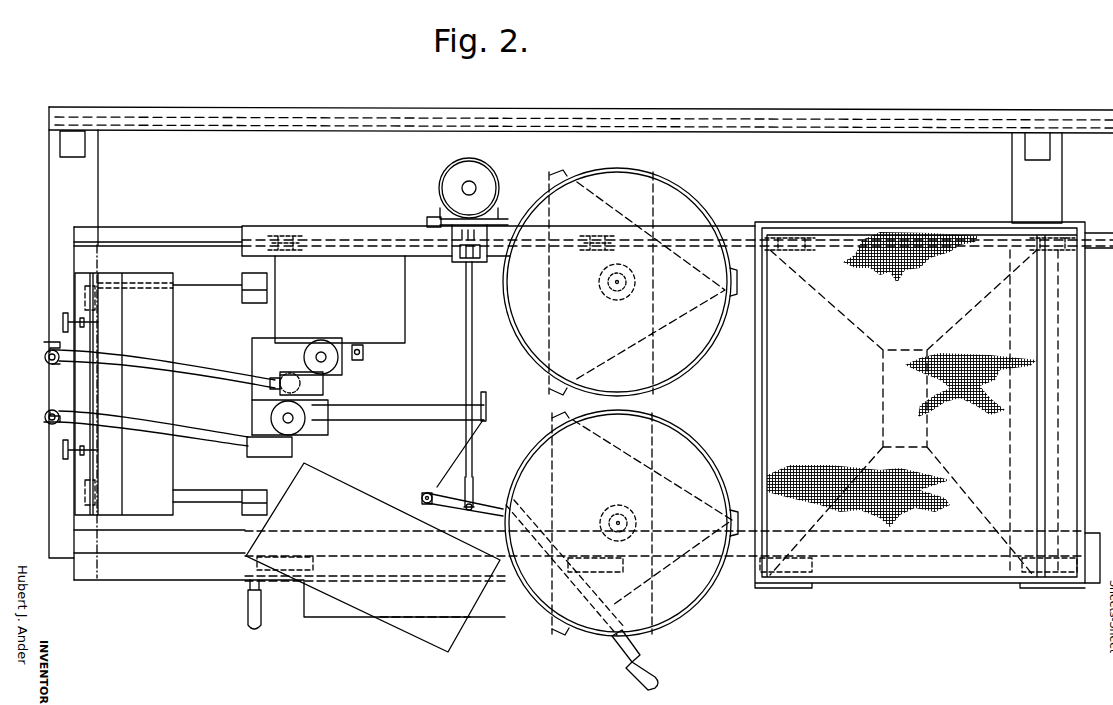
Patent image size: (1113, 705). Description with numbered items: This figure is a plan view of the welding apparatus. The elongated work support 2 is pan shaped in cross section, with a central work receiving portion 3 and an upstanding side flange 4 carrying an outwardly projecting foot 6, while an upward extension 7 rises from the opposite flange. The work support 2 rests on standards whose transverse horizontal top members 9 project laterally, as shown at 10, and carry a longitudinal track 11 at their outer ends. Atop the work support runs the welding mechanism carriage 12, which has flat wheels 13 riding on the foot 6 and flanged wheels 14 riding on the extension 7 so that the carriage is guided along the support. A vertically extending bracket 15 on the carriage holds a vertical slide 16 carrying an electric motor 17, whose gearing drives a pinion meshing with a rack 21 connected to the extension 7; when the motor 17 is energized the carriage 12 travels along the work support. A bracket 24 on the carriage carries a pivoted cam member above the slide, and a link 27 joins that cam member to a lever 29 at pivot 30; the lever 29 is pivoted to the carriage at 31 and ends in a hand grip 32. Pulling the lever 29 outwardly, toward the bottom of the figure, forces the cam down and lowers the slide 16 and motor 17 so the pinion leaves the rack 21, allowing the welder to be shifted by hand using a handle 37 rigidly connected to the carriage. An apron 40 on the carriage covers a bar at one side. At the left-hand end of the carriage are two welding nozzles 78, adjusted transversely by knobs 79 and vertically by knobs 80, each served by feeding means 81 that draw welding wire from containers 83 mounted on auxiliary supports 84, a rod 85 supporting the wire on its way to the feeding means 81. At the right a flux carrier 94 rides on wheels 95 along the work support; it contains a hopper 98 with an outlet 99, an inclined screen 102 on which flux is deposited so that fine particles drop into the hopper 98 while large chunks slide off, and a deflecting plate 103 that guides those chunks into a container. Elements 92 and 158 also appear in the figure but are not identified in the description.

The work support 2 is at (70, 562).
The central work receiving portion 3 is at (208, 418).
The side flange 4 is at (168, 556).
The foot 6 is at (126, 580).
The upward extension 7 is at (203, 237).
The top member 9 is at (50, 516).
The lateral projection 10 is at (98, 174).
The longitudinal track 11 is at (312, 105).
The carriage 12 is at (220, 394).
The flat wheels 13 is at (314, 565).
The flanged wheels 14 is at (290, 232).
The bracket 15 is at (426, 222).
The vertical slide 16 is at (438, 214).
The electric motor 17 is at (455, 163).
The rack 21 is at (145, 237).
The bracket 24 is at (456, 252).
The link 27 is at (472, 355).
The lever 29 is at (478, 505).
The pivot 30 is at (468, 510).
The pivot 31 is at (428, 492).
The hand grip 32 is at (650, 665).
The handle 37 is at (248, 604).
The apron 40 is at (345, 620).
The welding nozzles 78 is at (48, 408).
The knobs 79 is at (60, 322).
The knobs 80 is at (44, 343).
The feeding means 81 is at (340, 370).
The containers 83 is at (698, 206).
The auxiliary support 84 is at (612, 200).
The rod 85 is at (488, 432).
The hopper 92 is at (160, 330).
The flux carrier 94 is at (922, 224).
The wheels 95 is at (812, 565).
The hopper 98 is at (858, 325).
The outlet 99 is at (884, 402).
The inclined screen 102 is at (900, 268).
The deflecting plate 103 is at (1050, 462).
The plate edge 158 is at (450, 625).